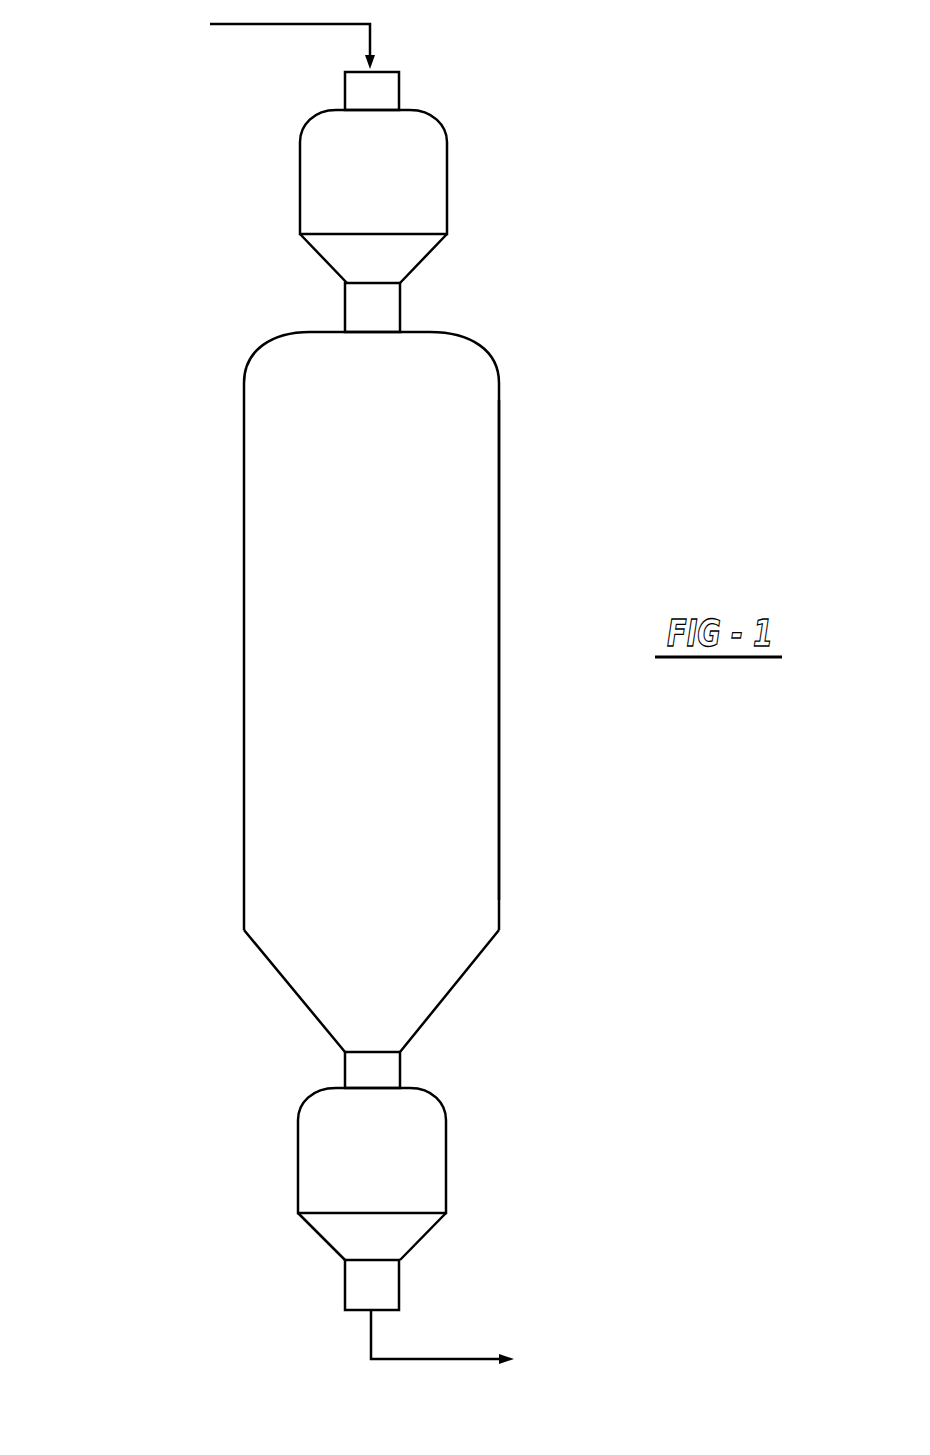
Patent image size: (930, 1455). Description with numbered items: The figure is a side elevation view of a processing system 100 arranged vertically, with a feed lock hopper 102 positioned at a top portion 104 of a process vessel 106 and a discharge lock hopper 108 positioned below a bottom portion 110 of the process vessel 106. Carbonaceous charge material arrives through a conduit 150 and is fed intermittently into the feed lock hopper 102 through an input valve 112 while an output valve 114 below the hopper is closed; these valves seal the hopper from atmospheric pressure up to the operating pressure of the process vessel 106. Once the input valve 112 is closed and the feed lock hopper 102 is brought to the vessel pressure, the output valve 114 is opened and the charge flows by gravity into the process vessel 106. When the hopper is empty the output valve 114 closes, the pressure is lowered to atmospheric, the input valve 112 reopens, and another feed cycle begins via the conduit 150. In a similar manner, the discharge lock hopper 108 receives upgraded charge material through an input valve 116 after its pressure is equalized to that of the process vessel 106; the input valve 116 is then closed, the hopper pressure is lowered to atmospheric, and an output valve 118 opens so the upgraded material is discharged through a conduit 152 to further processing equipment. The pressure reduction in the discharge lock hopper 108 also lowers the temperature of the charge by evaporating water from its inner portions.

The processing system 100 is at (638, 530).
The feed lock hopper 102 is at (447, 190).
The top portion 104 is at (421, 331).
The process vessel 106 is at (500, 622).
The discharge lock hopper 108 is at (446, 1170).
The bottom portion 110 is at (417, 1032).
The input valve 112 is at (400, 90).
The output valve 114 is at (345, 308).
The input valve 116 is at (345, 1073).
The output valve 118 is at (343, 1287).
The conduit 150 is at (317, 25).
The conduit 152 is at (440, 1359).